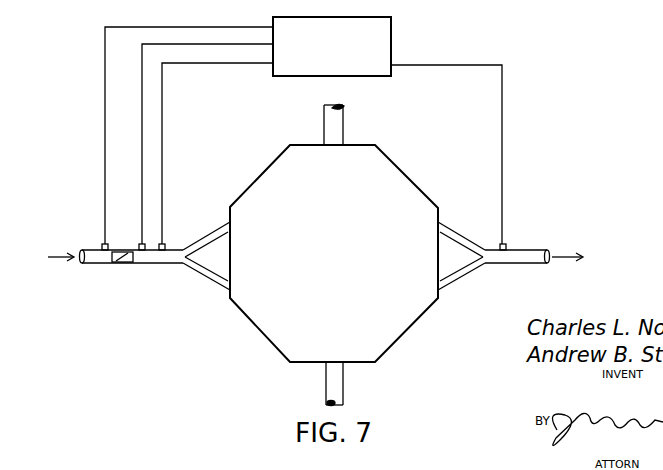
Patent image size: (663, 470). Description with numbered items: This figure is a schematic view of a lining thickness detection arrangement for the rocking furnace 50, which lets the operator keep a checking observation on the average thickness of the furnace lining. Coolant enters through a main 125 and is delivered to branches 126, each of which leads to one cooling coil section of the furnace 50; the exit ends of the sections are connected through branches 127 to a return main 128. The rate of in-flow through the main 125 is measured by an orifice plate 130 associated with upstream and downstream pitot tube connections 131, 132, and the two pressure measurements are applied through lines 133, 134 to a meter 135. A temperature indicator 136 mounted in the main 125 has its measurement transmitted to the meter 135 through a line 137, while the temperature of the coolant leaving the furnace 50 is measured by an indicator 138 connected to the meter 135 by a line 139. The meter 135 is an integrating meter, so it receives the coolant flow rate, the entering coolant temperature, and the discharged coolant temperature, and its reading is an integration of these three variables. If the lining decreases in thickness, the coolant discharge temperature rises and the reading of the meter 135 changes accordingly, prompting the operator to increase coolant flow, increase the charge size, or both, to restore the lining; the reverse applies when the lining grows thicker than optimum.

The furnace 50 is at (402, 167).
The main 125 is at (90, 266).
The branches 126 is at (213, 245).
The branches 127 is at (455, 252).
The return main 128 is at (527, 266).
The orifice plate 130 is at (118, 264).
The upstream pitot tube connection 131 is at (104, 244).
The downstream pitot tube connection 132 is at (142, 244).
The line 133 is at (105, 108).
The line 134 is at (142, 113).
The meter 135 is at (393, 54).
The temperature indicator 136 is at (165, 244).
The line 137 is at (162, 143).
The indicator 138 is at (505, 241).
The line 139 is at (503, 152).